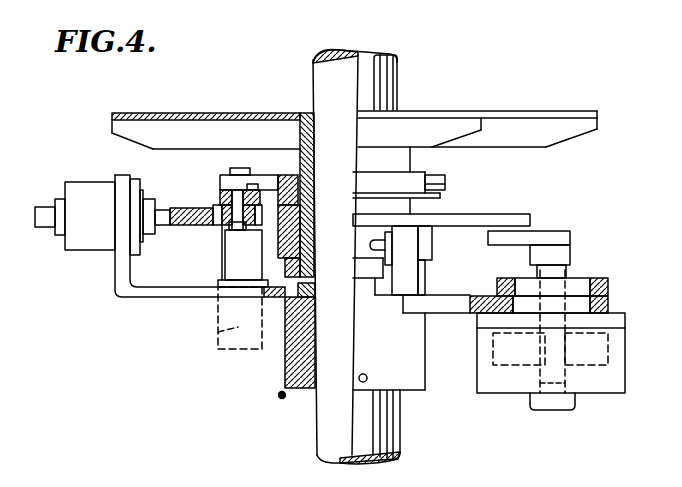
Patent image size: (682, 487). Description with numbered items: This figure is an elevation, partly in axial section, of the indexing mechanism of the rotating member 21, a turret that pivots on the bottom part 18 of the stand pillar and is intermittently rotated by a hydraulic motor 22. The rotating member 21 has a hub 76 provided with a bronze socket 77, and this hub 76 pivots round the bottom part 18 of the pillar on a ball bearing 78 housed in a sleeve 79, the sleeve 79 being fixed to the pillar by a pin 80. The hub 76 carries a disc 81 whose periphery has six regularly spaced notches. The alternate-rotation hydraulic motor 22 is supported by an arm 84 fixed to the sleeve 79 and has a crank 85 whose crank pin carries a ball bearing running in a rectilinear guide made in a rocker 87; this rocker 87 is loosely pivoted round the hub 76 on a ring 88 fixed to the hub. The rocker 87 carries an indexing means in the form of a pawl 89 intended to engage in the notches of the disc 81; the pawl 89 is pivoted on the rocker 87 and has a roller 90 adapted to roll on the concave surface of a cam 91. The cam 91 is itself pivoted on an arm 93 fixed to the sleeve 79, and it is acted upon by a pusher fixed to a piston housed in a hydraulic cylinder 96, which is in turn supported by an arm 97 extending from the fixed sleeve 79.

The bottom part of the pillar 18 is at (397, 72).
The rotating member 21 is at (561, 118).
The hydraulic motor 22 is at (611, 386).
The hub 76 is at (300, 138).
The bronze socket 77 is at (314, 160).
The ball bearing 78 is at (148, 299).
The sleeve 79 is at (300, 391).
The pin 80 is at (368, 377).
The disc 81 is at (440, 196).
The arm 84 is at (450, 308).
The crank 85 is at (566, 245).
The rocker 87 is at (510, 224).
The ring 88 is at (282, 265).
The pawl 89 is at (224, 205).
The roller 90 is at (219, 226).
The cam 91 is at (192, 202).
The arm 93 is at (218, 338).
The hydraulic cylinder 96 is at (90, 193).
The arm 97 is at (126, 273).